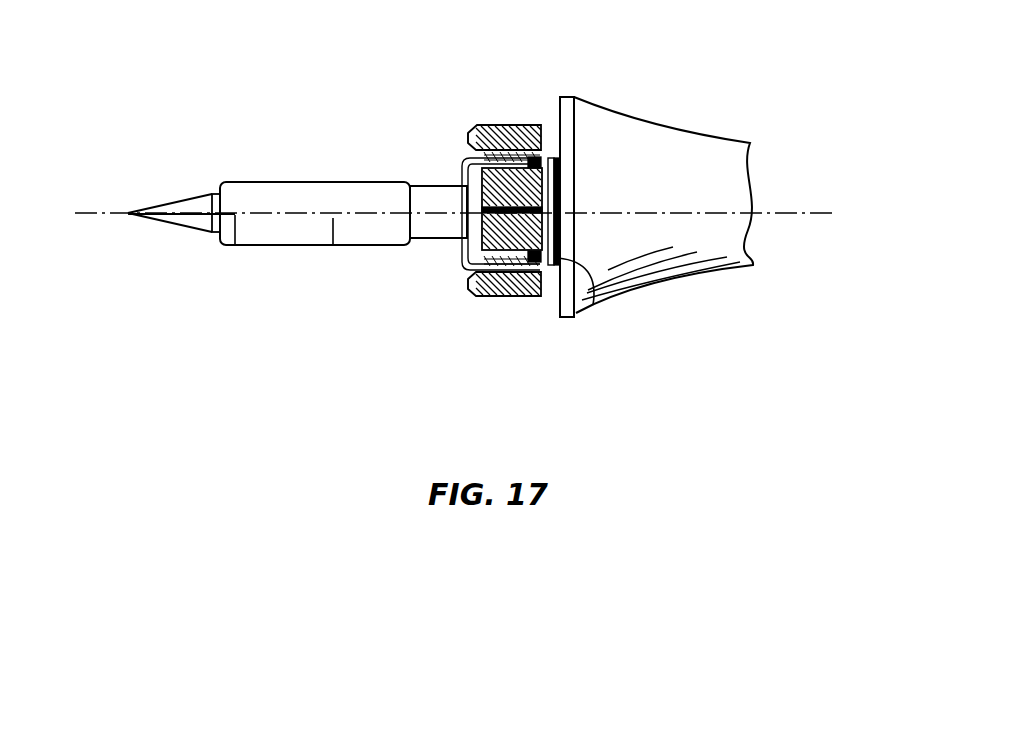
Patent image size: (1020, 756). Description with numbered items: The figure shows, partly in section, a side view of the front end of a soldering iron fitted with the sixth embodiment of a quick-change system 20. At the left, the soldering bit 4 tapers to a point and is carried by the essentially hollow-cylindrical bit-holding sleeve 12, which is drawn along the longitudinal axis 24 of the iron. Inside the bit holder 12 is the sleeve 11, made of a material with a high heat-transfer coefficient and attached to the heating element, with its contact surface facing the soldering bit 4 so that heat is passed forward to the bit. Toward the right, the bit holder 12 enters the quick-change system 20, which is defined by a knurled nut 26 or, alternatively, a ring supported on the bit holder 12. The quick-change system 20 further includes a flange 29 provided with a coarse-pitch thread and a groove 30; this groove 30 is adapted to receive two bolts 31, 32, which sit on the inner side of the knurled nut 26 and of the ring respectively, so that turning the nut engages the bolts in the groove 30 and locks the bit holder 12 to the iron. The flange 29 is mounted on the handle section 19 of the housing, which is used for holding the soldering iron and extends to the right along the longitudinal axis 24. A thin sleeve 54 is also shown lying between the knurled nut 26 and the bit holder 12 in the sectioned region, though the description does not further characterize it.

The soldering bit 4 is at (185, 220).
The sleeve 11 is at (305, 232).
The bit-holding sleeve 12 is at (298, 185).
The handle section 19 is at (667, 150).
The quick-change system 20 is at (500, 95).
The longitudinal axis 24 is at (716, 268).
The knurled nut 26 is at (480, 297).
The flange 29 is at (593, 305).
The groove 30 is at (462, 172).
The bolt 31 is at (545, 165).
The bolt 32 is at (533, 293).
The thin sleeve 54 is at (470, 262).